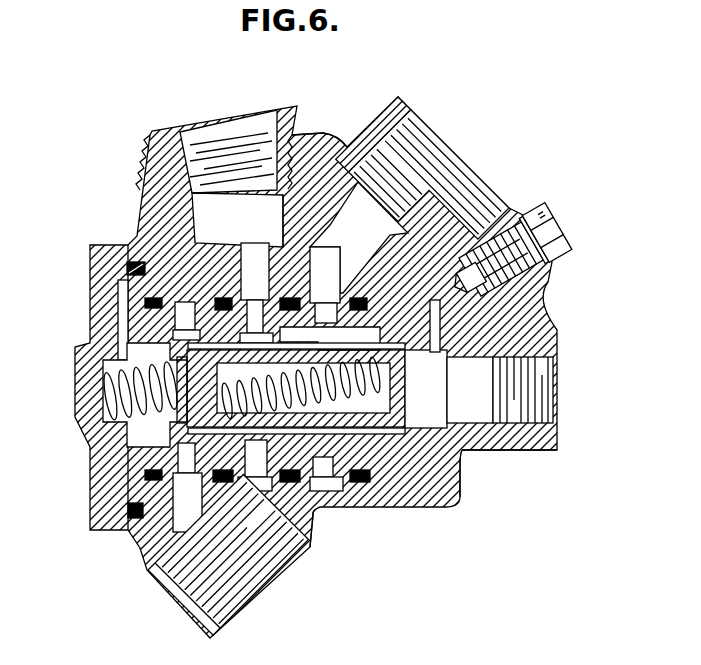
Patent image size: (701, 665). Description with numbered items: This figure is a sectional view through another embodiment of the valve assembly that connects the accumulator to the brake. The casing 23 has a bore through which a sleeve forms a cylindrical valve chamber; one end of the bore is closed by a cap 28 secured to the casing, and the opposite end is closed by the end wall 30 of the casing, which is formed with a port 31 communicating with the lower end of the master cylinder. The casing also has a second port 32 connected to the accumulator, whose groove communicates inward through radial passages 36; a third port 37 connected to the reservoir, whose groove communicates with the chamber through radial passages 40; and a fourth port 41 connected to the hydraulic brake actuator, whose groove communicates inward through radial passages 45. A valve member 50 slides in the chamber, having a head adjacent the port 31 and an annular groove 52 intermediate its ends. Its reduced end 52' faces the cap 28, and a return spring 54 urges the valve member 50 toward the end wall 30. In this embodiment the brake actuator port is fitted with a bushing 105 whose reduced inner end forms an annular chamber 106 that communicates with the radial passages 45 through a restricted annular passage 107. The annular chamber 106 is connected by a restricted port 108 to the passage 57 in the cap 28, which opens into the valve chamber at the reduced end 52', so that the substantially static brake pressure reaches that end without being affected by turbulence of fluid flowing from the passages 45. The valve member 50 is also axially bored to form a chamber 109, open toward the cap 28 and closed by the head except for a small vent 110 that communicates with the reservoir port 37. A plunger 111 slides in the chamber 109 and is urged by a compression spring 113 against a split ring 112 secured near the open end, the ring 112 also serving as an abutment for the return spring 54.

The bushing 105 is at (175, 178).
The fourth port 41 is at (323, 131).
The third port 37 is at (427, 157).
The casing 23 is at (477, 207).
The annular chamber 106 is at (202, 238).
The restricted annular passage 107 is at (287, 233).
The restricted port 108 is at (128, 278).
The passage 57 is at (123, 297).
The radially extending ports or passages 36 is at (186, 314).
The radial passages 45 is at (252, 304).
The radial passages 40 is at (323, 294).
The annular groove 52 is at (330, 338).
The vent 110 is at (408, 336).
The spring 54 is at (100, 375).
The plunger 111 is at (193, 385).
The split ring 112 is at (175, 420).
The port 31 is at (520, 407).
The cap 28 is at (107, 445).
The reduced end 52' is at (118, 487).
The end wall 30 is at (458, 467).
The valve member 50 is at (315, 518).
The chamber 109 is at (340, 418).
The compression spring 113 is at (405, 430).
The second port 32 is at (255, 580).